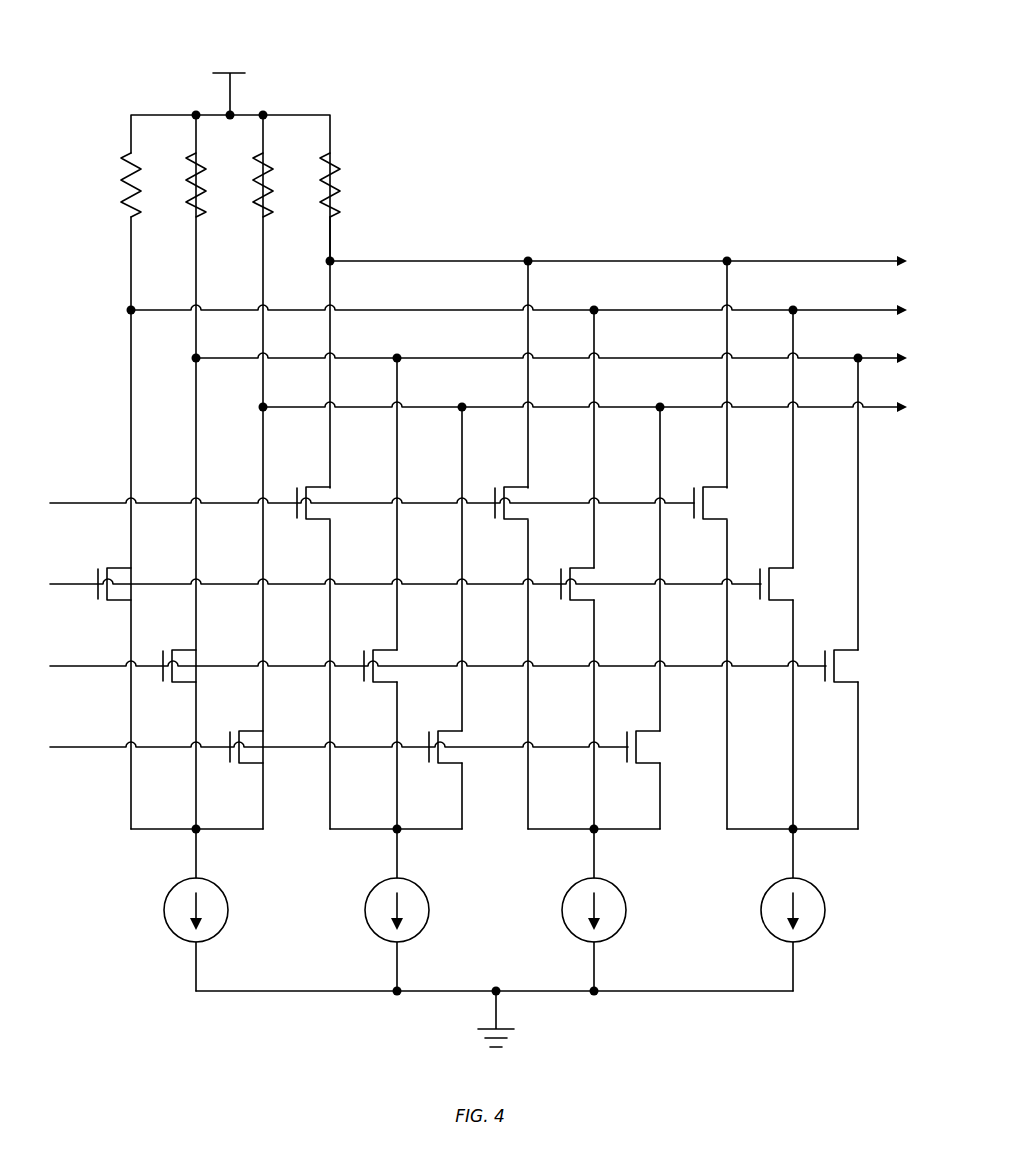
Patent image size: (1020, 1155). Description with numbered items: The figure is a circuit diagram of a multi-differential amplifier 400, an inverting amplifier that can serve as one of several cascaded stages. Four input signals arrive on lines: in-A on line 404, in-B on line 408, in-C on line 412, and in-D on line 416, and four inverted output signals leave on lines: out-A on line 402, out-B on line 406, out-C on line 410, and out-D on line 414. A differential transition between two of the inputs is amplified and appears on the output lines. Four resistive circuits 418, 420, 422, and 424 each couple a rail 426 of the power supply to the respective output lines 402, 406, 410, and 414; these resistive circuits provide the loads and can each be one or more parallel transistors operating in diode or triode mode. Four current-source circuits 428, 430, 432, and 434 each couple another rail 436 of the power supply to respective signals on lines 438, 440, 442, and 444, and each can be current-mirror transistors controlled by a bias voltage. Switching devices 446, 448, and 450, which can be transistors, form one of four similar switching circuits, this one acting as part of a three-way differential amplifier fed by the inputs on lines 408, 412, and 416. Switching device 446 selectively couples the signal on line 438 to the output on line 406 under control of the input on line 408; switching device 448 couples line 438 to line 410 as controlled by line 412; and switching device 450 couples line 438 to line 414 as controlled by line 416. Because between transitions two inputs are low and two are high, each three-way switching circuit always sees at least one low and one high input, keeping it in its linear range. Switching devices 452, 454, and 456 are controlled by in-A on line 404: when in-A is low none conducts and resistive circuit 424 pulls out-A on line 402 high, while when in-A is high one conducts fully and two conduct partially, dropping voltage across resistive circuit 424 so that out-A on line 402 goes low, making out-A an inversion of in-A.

The multi-differential amplifier 400 is at (148, 44).
The line carrying signal out-A 402 is at (825, 262).
The line carrying signal in-A 404 is at (63, 506).
The line carrying signal out-B 406 is at (825, 310).
The line carrying signal in-B 408 is at (63, 587).
The line carrying signal out-C 410 is at (825, 358).
The line carrying signal in-C 412 is at (63, 669).
The line carrying signal out-D 414 is at (875, 408).
The line carrying signal in-D 416 is at (63, 750).
The resistive circuit 418 is at (128, 181).
The resistive circuit 420 is at (193, 181).
The resistive circuit 422 is at (257, 181).
The resistive circuit 424 is at (325, 181).
The rail of power supply 426 is at (245, 73).
The current-source circuit 428 is at (164, 910).
The current-source circuit 430 is at (365, 910).
The current-source circuit 432 is at (562, 910).
The current-source circuit 434 is at (761, 910).
The another rail of power supply 436 is at (490, 1027).
The line 438 is at (178, 829).
The line 440 is at (378, 829).
The line 442 is at (576, 829).
The line 444 is at (775, 829).
The switching device 446 is at (118, 568).
The switching device 448 is at (183, 650).
The switching device 450 is at (250, 731).
The switching device 452 is at (318, 488).
The switching device 454 is at (515, 488).
The switching device 456 is at (712, 488).